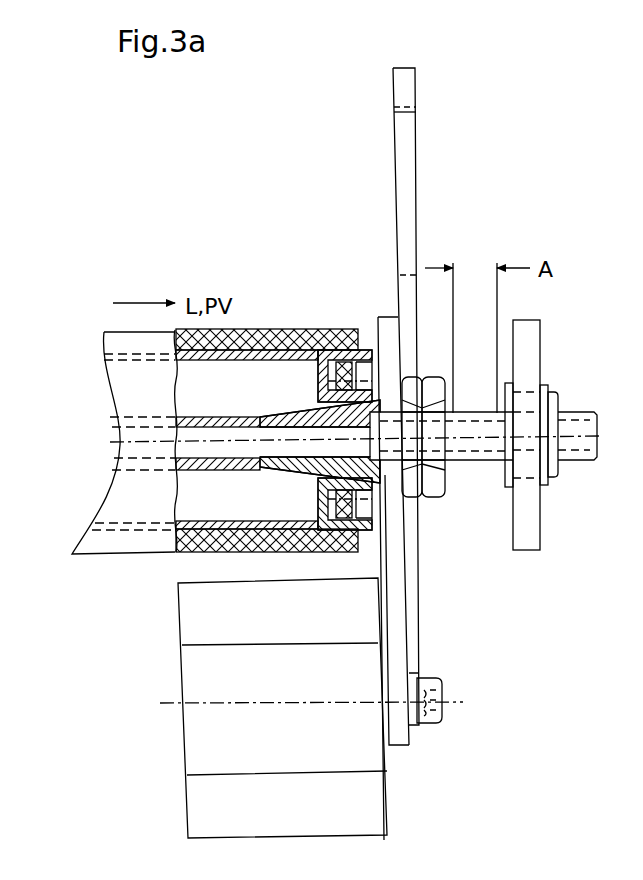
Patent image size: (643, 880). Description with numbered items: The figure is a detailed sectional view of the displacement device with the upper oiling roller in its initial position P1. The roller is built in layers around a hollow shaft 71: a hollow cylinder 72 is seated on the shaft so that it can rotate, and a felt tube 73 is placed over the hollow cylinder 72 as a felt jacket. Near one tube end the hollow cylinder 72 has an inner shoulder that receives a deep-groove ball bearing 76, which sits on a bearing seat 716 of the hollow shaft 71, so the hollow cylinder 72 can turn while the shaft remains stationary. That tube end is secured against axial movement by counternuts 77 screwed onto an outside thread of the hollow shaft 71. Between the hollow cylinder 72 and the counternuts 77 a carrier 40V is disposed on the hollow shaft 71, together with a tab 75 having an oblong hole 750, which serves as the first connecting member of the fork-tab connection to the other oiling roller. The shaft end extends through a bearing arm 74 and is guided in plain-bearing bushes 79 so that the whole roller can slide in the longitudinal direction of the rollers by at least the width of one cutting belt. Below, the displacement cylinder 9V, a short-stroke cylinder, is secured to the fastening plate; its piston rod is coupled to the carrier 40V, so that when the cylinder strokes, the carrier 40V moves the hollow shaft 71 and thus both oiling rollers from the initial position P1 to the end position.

The initial position P1 is at (313, 257).
The felt tube 73 is at (250, 330).
The hollow cylinder 72 is at (205, 358).
The hollow shaft 71 is at (195, 470).
The bearing seat 716 is at (312, 474).
The deep-groove ball bearing 76 is at (318, 373).
The carrier 40V is at (395, 632).
The oblong hole 750 is at (416, 182).
The tab 75 is at (403, 93).
The counternuts 77 is at (418, 497).
The plain-bearing bushes 79 is at (505, 478).
The bearing arm 74 is at (528, 548).
The displacement cylinder 9V is at (265, 625).